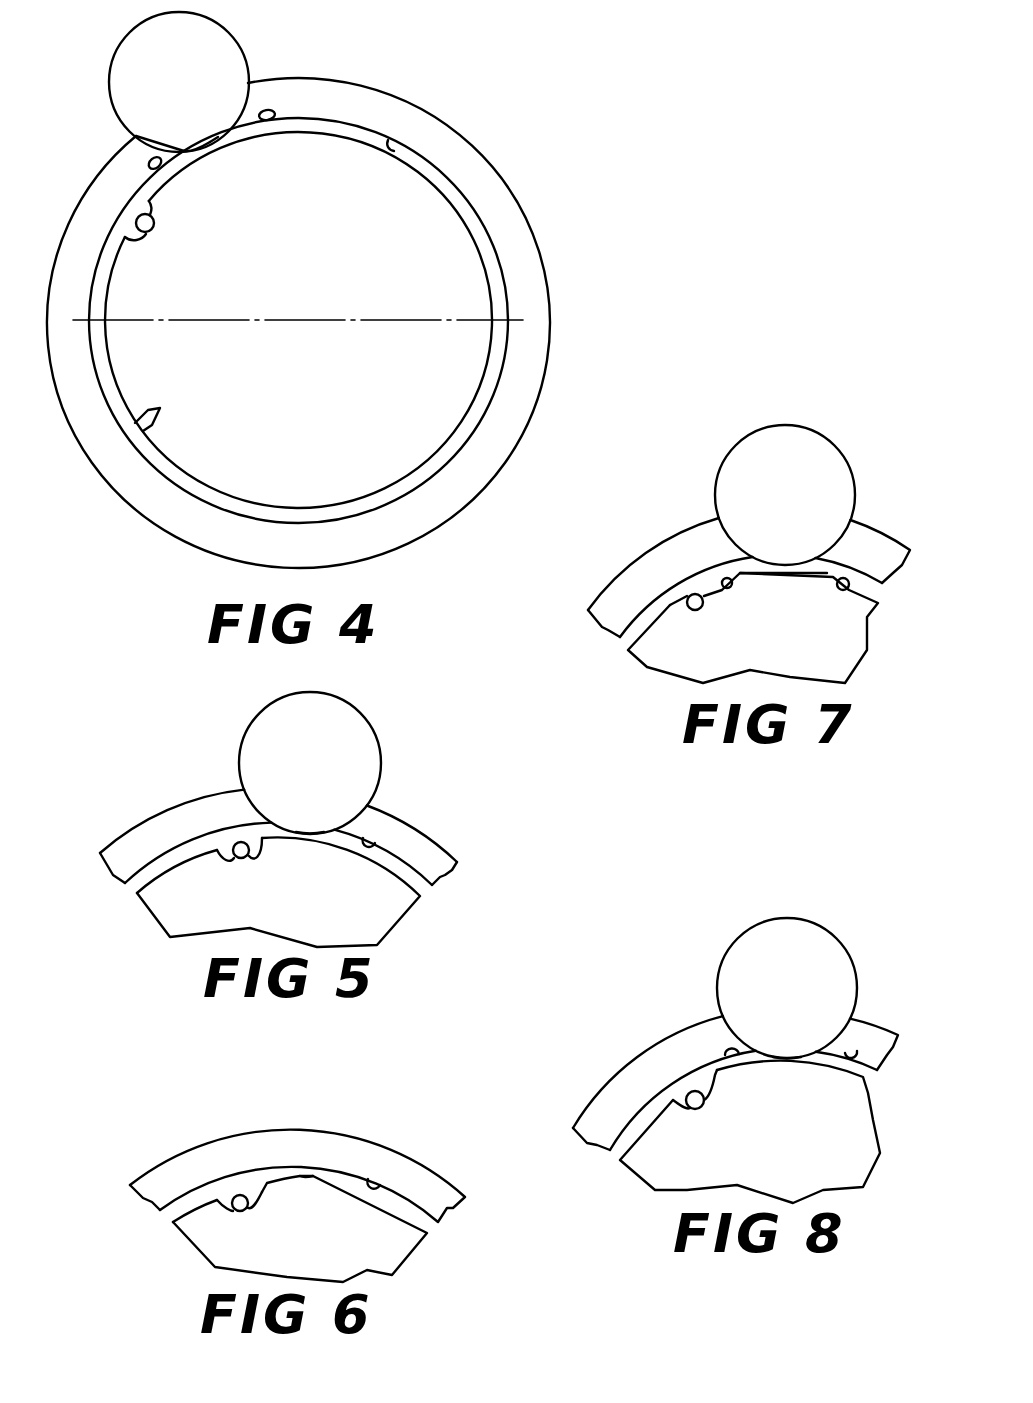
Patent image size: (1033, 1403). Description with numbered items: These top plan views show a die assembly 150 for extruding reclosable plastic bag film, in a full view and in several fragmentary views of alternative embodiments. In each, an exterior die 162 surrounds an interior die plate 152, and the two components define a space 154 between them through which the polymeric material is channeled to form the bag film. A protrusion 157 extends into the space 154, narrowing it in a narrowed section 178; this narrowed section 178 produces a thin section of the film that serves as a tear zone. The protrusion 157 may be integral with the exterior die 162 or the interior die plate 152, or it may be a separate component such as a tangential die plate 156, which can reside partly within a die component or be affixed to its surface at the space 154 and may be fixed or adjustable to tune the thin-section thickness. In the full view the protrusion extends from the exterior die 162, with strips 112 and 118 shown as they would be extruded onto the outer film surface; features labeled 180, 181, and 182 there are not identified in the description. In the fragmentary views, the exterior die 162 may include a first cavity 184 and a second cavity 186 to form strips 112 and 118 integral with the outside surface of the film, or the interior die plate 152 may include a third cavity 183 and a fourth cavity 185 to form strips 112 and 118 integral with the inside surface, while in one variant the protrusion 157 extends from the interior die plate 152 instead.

In FIG. 4, the ball bearing assembly 150 is at (650, 244).
In FIG. 4, the interior die plate 152 is at (340, 392).
In FIG. 5, the interior die plate 152 is at (170, 910).
In FIG. 6, the interior die plate 152 is at (212, 1250).
In FIG. 7, the interior die plate 152 is at (665, 663).
In FIG. 8, the interior die plate 152 is at (660, 1182).
In FIG. 4, the space 154 is at (392, 147).
In FIG. 5, the space 154 is at (132, 888).
In FIG. 6, the space 154 is at (167, 1213).
In FIG. 7, the space 154 is at (627, 640).
In FIG. 8, the space 154 is at (618, 1153).
In FIG. 4, the tangential die plate 156 is at (220, 52).
In FIG. 5, the tangential die plate 156 is at (262, 735).
In FIG. 7, the tangential die plate 156 is at (733, 465).
In FIG. 8, the tangential die plate 156 is at (763, 935).
In FIG. 4, the protrusion 157 is at (218, 142).
In FIG. 5, the protrusion 157 is at (302, 828).
In FIG. 6, the protrusion 157 is at (310, 1183).
In FIG. 7, the protrusion 157 is at (785, 557).
In FIG. 8, the protrusion 157 is at (795, 1050).
In FIG. 4, the exterior die 162 is at (487, 180).
In FIG. 5, the exterior die 162 is at (183, 815).
In FIG. 6, the exterior die 162 is at (252, 1147).
In FIG. 7, the exterior die 162 is at (670, 547).
In FIG. 8, the exterior die 162 is at (618, 1085).
In FIG. 4, the strip 112 is at (268, 110).
In FIG. 4, the strip 118 is at (128, 151).
In FIG. 4, the narrowed section 178 is at (213, 140).
In FIG. 4, the spring clip 180 is at (130, 197).
In FIG. 5, the spring clip 180 is at (215, 865).
In FIG. 6, the spring clip 180 is at (232, 1220).
In FIG. 7, the spring clip 180 is at (687, 623).
In FIG. 8, the spring clip 180 is at (692, 1115).
In FIG. 4, the centerline axis 181 is at (325, 320).
In FIG. 4, the notch 182 is at (147, 410).
In FIG. 7, the third cavity 183 is at (853, 593).
In FIG. 5, the first cavity 184 is at (366, 838).
In FIG. 6, the first cavity 184 is at (373, 1177).
In FIG. 8, the first cavity 184 is at (850, 1050).
In FIG. 7, the fourth cavity 185 is at (727, 598).
In FIG. 8, the second cavity 186 is at (727, 1027).